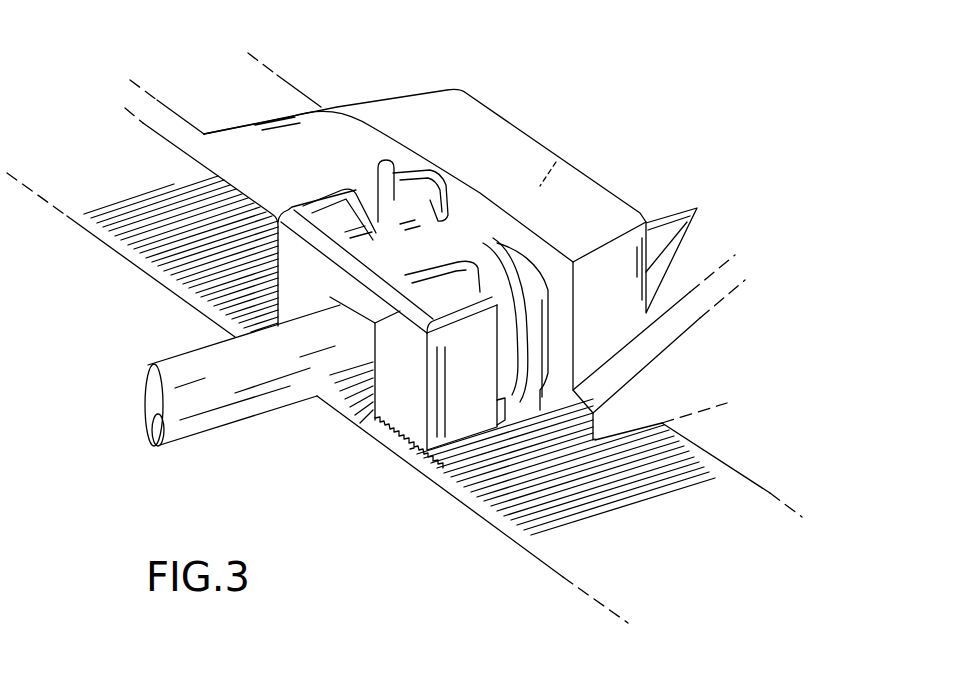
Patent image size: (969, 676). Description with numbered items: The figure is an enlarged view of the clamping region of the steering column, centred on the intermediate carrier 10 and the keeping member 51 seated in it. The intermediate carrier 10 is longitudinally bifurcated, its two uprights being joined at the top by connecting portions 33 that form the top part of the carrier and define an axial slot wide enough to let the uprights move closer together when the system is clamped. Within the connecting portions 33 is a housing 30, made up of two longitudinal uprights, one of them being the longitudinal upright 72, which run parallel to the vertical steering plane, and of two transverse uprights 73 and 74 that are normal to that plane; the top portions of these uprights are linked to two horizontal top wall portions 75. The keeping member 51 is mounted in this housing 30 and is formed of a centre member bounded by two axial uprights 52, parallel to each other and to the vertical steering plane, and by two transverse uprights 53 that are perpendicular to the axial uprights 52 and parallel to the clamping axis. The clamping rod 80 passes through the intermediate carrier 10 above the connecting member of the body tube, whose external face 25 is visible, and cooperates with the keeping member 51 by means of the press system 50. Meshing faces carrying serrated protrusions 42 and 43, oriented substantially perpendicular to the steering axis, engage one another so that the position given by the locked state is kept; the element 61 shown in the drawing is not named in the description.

The intermediate carrier 10 is at (696, 340).
The external face 25 is at (700, 512).
The housing 30 is at (505, 224).
The connecting portions 33 is at (682, 278).
The serrated protrusions 42 is at (387, 430).
The serrated protrusions 43 is at (515, 517).
The press system 50 is at (524, 114).
The keeping member 51 is at (417, 399).
The axial uprights 52 is at (293, 270).
The transverse uprights 53 is at (465, 400).
The contact spring 61 is at (408, 217).
The longitudinal upright 72 is at (553, 165).
The transverse upright 73 is at (602, 285).
The transverse upright 74 is at (333, 140).
The horizontal top wall portions 75 is at (467, 133).
The clamping rod 80 is at (215, 397).